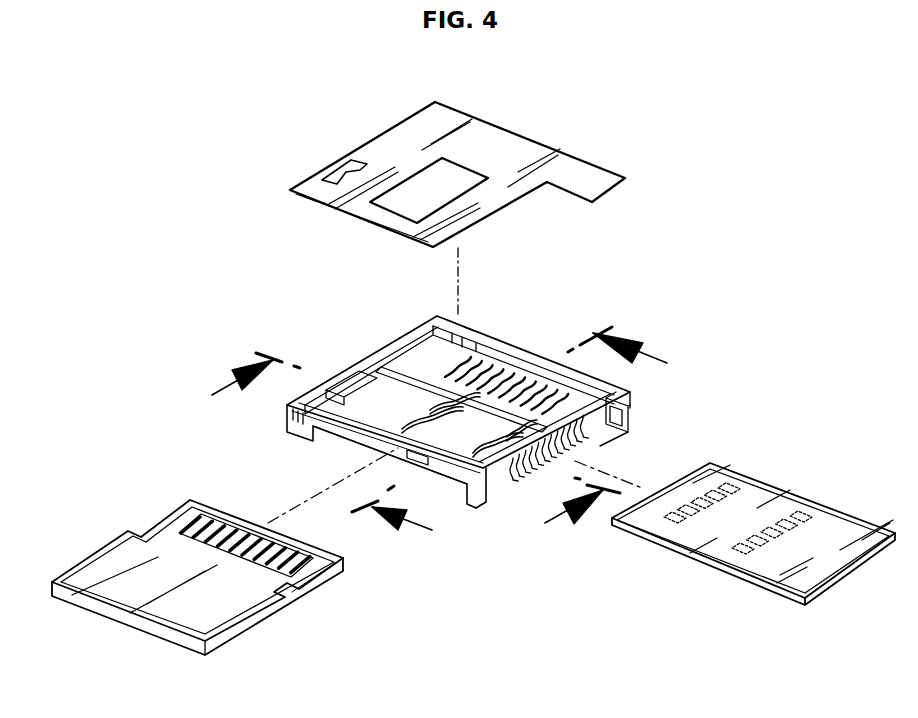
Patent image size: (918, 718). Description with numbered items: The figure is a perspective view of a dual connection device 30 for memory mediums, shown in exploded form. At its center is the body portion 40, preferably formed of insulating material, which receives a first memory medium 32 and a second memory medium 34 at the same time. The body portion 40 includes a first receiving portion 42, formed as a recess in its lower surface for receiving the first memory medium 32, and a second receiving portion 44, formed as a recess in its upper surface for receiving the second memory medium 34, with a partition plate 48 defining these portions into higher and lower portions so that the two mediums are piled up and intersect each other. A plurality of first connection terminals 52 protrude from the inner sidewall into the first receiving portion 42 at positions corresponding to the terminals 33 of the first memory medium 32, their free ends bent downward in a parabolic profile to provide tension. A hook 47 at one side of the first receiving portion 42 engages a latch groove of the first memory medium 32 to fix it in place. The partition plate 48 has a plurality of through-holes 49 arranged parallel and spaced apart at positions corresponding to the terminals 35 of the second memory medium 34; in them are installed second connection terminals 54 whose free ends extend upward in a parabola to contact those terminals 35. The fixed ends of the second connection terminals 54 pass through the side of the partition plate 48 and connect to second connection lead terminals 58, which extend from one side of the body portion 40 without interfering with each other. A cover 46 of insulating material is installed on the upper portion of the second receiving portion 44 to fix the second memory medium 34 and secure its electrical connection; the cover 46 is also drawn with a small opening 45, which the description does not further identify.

The dual connection device 30 is at (704, 302).
The first memory medium 32 is at (85, 570).
The terminal of the first memory medium 33 is at (195, 520).
The second memory medium 34 is at (763, 480).
The terminal of the second memory medium 35 is at (741, 556).
The body portion 40 is at (457, 320).
The first receiving portion 42 is at (330, 446).
The second receiving portion 44 is at (578, 423).
The engaging hole of cover 45 is at (338, 178).
The cover 46 is at (497, 140).
The hook 47 is at (352, 384).
The partition plate 48 is at (376, 404).
The through-holes 49 is at (393, 404).
The first connection terminals 52 is at (500, 362).
The second connection terminals 54 is at (400, 420).
The second connection lead terminals 58 is at (530, 482).